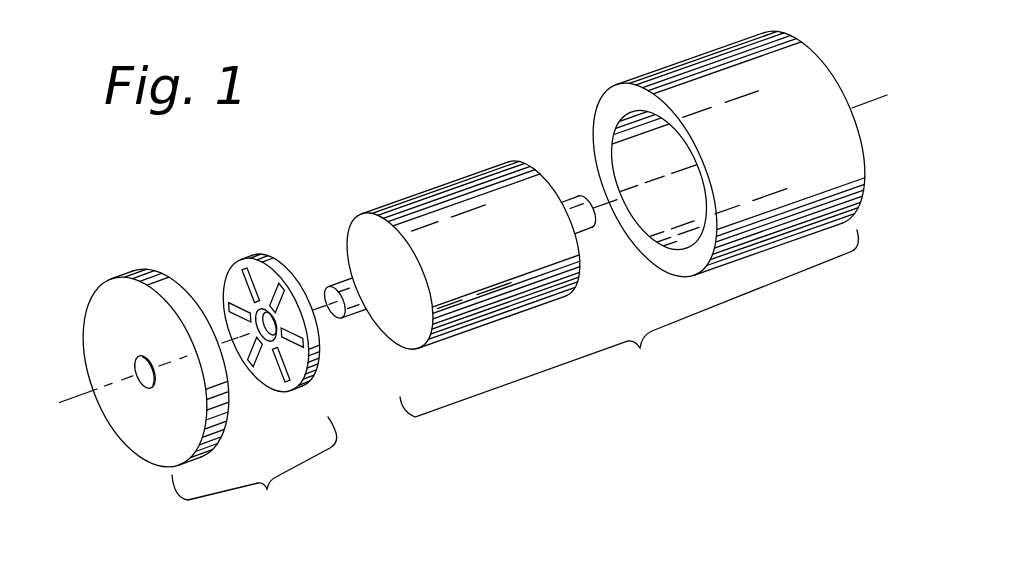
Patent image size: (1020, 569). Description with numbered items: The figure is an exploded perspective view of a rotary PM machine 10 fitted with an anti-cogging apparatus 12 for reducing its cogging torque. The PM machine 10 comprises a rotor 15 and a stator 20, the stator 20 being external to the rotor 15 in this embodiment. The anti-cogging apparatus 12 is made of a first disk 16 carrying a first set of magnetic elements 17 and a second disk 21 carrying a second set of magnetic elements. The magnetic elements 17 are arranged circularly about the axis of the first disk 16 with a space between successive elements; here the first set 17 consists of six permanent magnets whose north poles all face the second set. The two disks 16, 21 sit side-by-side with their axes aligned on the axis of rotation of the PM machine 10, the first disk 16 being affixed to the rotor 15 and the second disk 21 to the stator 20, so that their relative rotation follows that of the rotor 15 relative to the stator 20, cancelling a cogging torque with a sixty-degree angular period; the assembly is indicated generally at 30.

The rotary PM machine 10 is at (629, 323).
The anti-cogging apparatus 12 is at (254, 469).
The rotor 15 is at (467, 207).
The first disk 16 is at (262, 256).
The first set of magnetic elements 17 is at (233, 273).
The stator 20 is at (732, 72).
The second disk 21 is at (133, 268).
The axis of rotation 30 is at (72, 386).